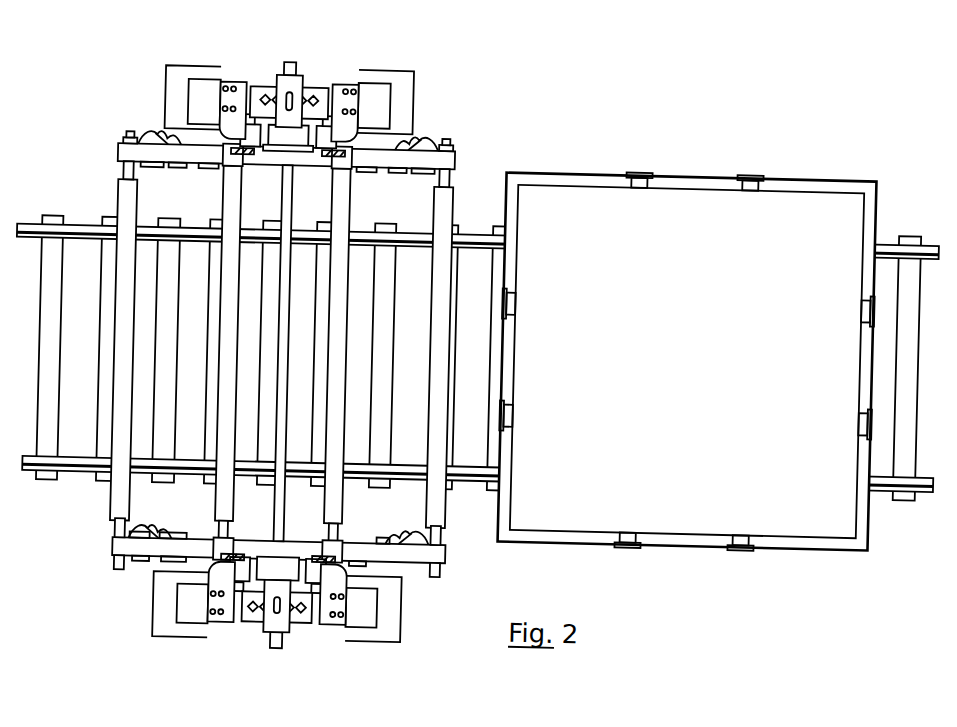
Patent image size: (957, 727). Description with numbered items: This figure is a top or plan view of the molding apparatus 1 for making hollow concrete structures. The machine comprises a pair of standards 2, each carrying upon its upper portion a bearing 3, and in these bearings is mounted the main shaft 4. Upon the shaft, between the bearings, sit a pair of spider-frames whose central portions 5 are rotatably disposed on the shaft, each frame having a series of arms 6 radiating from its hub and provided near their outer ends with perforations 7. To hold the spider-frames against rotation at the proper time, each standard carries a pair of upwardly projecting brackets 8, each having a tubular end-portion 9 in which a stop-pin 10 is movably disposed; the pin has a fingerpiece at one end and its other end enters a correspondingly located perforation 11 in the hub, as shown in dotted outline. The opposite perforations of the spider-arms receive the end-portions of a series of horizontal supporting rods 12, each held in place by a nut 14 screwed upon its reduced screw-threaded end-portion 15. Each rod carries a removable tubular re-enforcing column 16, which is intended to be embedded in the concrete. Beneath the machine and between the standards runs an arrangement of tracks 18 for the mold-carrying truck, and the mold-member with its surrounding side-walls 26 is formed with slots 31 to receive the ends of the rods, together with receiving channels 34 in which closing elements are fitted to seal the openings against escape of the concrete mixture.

The molding apparatus 1 is at (281, 359).
The standard 2 is at (196, 97).
The bearing 3 is at (295, 86).
The main shaft 4 is at (285, 67).
The central portion 5 is at (284, 568).
The arm 6 is at (198, 168).
The perforation 7 is at (152, 141).
The bracket 8 is at (228, 88).
The tubular end-portion 9 is at (235, 140).
The stop-pin 10 is at (249, 158).
The perforation 11 is at (240, 162).
The horizontal supporting rod 12 is at (119, 180).
The nut 14 is at (124, 140).
The screw-threaded end-portion 15 is at (119, 146).
The re-enforcing column 16 is at (122, 205).
The track 18 is at (311, 250).
The side-wall 26 is at (836, 173).
The slot 31 is at (645, 174).
The channel 34 is at (630, 171).